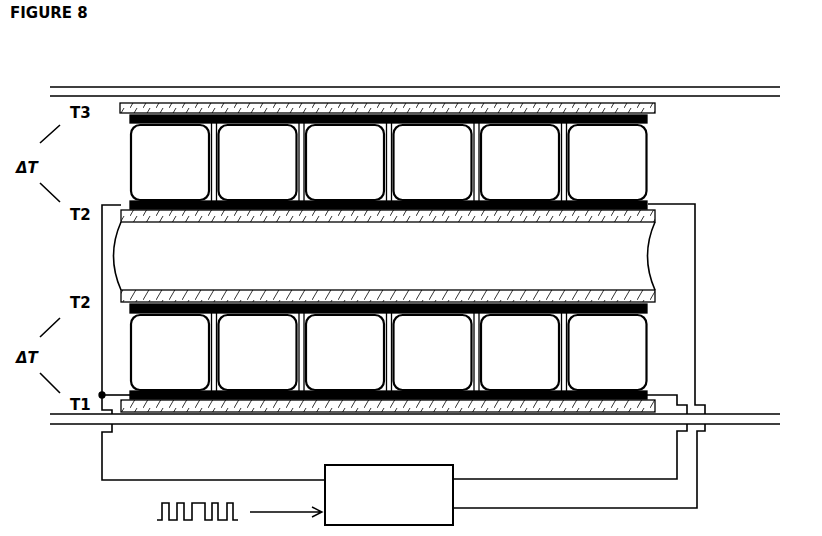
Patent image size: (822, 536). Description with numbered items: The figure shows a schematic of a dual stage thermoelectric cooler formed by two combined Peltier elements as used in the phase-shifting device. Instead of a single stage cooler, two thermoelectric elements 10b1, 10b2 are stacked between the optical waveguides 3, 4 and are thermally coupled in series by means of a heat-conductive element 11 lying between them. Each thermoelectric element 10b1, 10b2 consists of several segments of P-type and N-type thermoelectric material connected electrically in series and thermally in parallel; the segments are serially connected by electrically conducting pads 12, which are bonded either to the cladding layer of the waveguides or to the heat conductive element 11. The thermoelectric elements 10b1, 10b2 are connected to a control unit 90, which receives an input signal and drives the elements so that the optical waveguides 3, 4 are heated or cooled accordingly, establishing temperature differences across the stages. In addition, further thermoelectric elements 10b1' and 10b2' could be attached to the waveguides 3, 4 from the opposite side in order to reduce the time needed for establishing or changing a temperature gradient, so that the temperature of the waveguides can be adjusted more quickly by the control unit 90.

The optical waveguide 3 is at (753, 85).
The optical waveguide 4 is at (755, 415).
The thermoelectric element 10b1 is at (445, 156).
The further thermoelectric element 10b1' is at (460, 164).
The thermoelectric element 10b2 is at (445, 342).
The further thermoelectric element 10b2' is at (460, 349).
The heat-conductive element 11 is at (630, 270).
The electrically conducting pads 12 is at (548, 112).
The control unit 90 is at (389, 495).